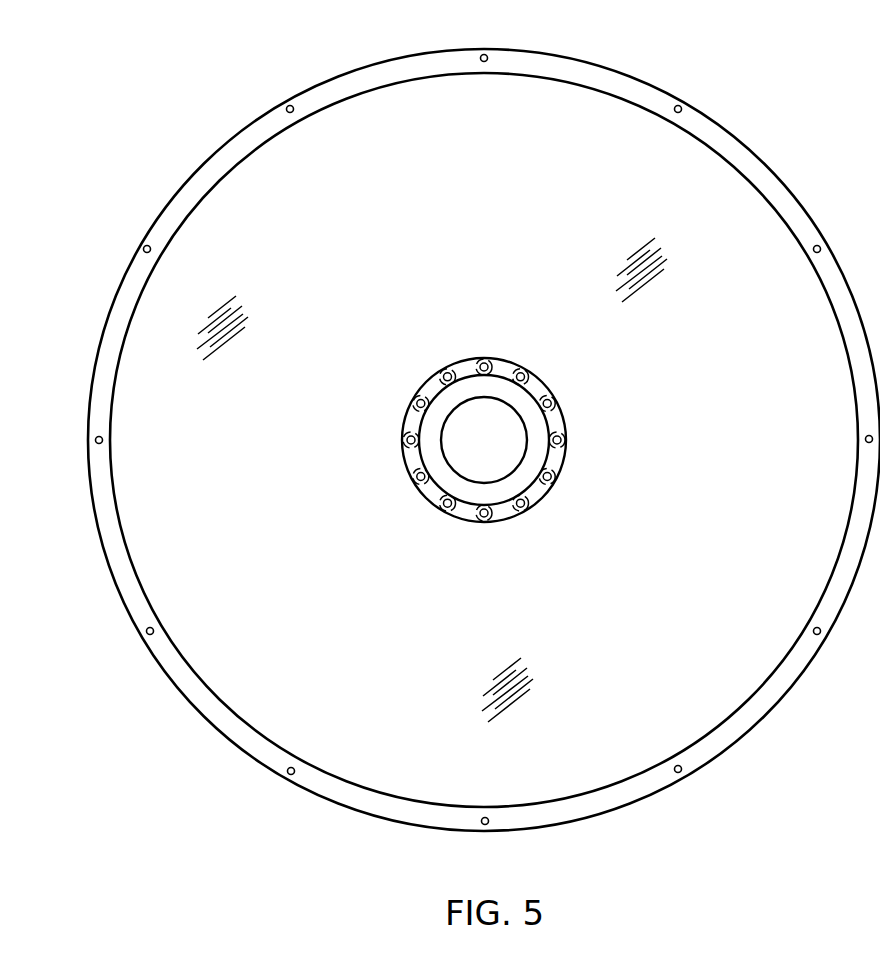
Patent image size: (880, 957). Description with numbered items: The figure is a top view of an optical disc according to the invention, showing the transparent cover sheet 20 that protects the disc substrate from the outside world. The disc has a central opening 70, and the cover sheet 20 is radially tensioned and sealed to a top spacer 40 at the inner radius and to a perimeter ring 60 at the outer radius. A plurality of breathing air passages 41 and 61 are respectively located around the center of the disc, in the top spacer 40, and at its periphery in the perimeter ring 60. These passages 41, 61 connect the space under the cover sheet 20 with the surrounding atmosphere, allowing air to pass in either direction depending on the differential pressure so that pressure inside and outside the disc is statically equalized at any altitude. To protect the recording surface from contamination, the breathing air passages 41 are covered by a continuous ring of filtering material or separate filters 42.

The transparent cover sheet 20 is at (590, 104).
The perimeter ring 60 is at (762, 157).
The breathing air passages 61 is at (287, 110).
The top spacer 40 is at (402, 455).
The breathing air passages 41 is at (540, 372).
The filters 42 is at (448, 372).
The central opening 70 is at (507, 462).